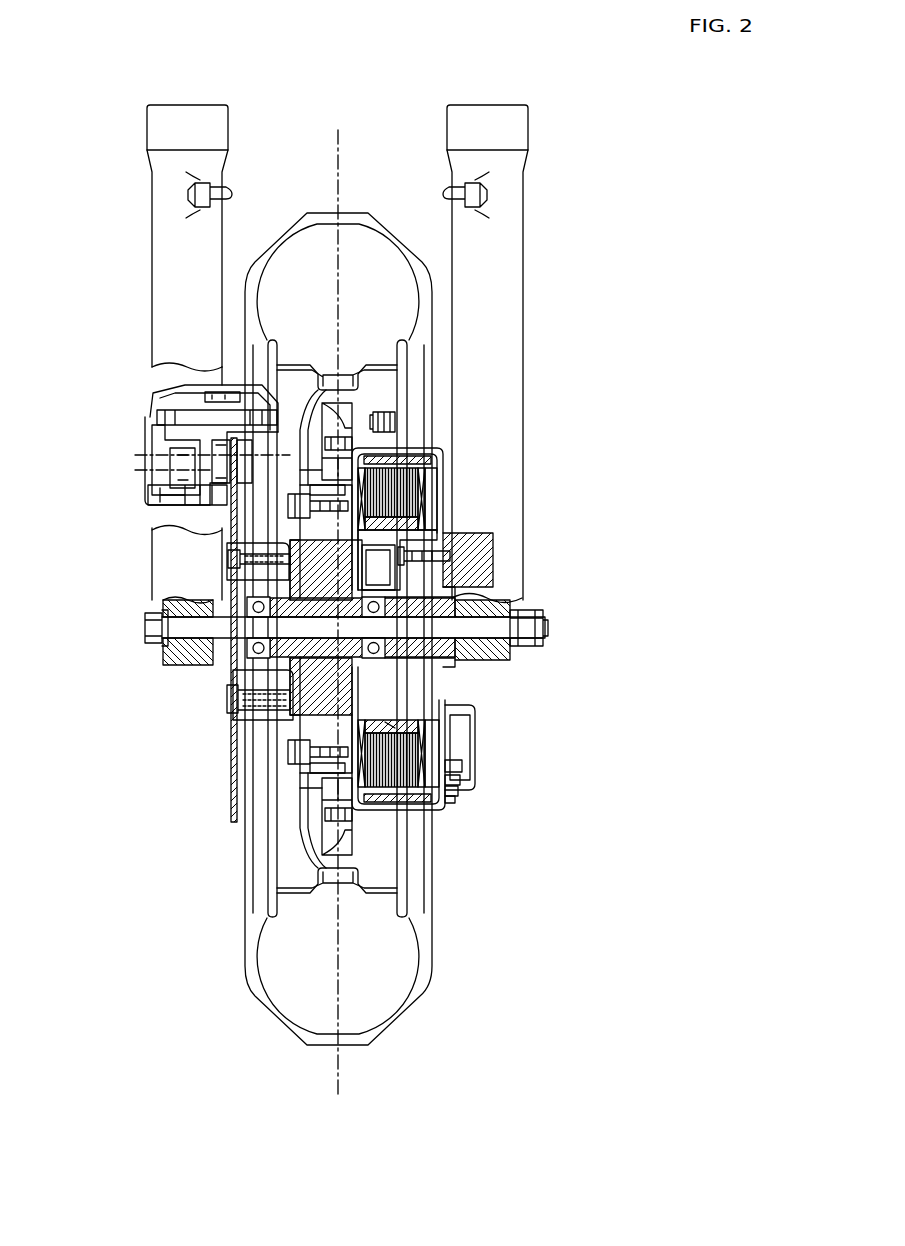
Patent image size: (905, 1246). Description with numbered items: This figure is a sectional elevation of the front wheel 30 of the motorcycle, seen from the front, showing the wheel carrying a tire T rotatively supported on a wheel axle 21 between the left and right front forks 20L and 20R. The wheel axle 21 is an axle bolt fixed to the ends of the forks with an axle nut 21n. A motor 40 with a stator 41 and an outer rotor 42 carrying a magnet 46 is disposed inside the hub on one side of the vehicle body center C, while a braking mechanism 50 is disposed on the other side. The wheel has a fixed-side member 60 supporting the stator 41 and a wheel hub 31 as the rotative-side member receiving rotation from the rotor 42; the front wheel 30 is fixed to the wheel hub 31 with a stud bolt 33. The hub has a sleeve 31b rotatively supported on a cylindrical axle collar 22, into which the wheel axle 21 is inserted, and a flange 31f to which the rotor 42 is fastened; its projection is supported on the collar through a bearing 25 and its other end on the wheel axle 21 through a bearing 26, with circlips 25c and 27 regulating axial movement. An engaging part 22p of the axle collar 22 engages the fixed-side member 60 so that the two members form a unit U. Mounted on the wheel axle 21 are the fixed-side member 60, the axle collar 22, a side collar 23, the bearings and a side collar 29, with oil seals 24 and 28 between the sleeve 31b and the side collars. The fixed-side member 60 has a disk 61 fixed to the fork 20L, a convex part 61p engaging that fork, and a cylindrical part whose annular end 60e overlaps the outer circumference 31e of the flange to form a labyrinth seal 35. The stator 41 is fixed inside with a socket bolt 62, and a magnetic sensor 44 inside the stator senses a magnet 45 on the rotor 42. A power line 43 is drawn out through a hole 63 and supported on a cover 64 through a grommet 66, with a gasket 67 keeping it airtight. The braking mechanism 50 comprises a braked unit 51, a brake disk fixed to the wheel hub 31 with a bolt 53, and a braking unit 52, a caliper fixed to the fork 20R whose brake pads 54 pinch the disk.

The right front fork 20R is at (158, 197).
The left front fork 20L is at (512, 192).
The tire T is at (250, 985).
The vehicle body center C is at (337, 599).
The front wheel 30 is at (312, 393).
The labyrinth seal 35 is at (325, 465).
The braking mechanism 50 is at (134, 413).
The braking unit 52 is at (232, 382).
The brake pads 54 is at (210, 402).
The wheel hub 31 is at (283, 511).
The flange 31f is at (227, 537).
The outer circumference of the flange 31e is at (343, 452).
The circlip 27 is at (228, 688).
The bearing 26 is at (232, 698).
The bearing 25 is at (453, 713).
The circlip 25c is at (388, 713).
The oil seal 28 is at (228, 598).
The axle collar 22 is at (437, 663).
The side collar 29 is at (230, 671).
The engaging part 22p is at (402, 657).
The side collar 23 is at (443, 683).
The oil seal 24 is at (470, 586).
The wheel axle 21 is at (547, 626).
The axle nut 21n is at (520, 613).
The bolt 53 is at (230, 697).
The braked unit 51 is at (266, 674).
The stud bolt 33 is at (287, 747).
The unit U is at (489, 636).
The fixed-side member 60 is at (365, 452).
The power line 43 is at (447, 797).
The rotor 42 is at (434, 466).
The magnet 46 is at (425, 447).
The motor 40 is at (440, 470).
The stator 41 is at (446, 483).
The magnet 45 is at (405, 535).
The magnetic sensor 44 is at (395, 556).
The sleeve 31b is at (372, 566).
The convex part 61p is at (452, 556).
The annular end 60e is at (394, 411).
The disk 61 is at (450, 698).
The socket bolt 62 is at (470, 727).
The gasket 67 is at (477, 767).
The hole 63 is at (472, 783).
The cover 64 is at (455, 792).
The grommet 66 is at (455, 798).